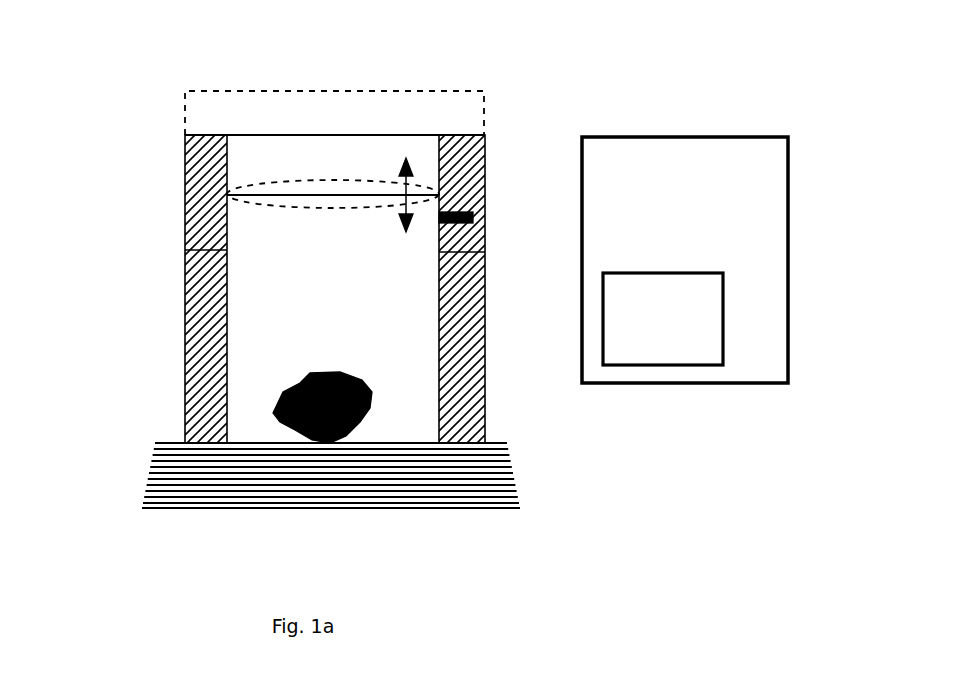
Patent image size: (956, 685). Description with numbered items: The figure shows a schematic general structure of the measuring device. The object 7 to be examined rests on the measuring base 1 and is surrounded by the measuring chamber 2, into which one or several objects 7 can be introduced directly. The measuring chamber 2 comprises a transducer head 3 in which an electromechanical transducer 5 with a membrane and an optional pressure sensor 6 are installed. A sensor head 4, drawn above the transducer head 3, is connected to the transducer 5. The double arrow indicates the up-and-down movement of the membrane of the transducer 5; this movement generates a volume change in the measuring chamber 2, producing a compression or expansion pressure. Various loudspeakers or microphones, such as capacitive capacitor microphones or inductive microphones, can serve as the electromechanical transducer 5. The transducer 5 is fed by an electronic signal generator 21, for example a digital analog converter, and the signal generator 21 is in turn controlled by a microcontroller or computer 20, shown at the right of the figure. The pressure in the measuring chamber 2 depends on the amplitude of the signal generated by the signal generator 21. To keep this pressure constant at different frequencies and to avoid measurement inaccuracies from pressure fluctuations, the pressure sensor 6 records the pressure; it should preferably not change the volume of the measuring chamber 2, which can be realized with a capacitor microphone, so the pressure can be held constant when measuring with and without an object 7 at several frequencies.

The measuring base 1 is at (188, 512).
The measuring chamber 2 is at (320, 300).
The transducer head 3 is at (203, 188).
The sensor head 4 is at (335, 117).
The electromechanical transducer 5 is at (293, 193).
The pressure sensor 6 is at (477, 228).
The object 7 is at (330, 443).
The computer 20 is at (762, 360).
The signal generator 21 is at (625, 347).